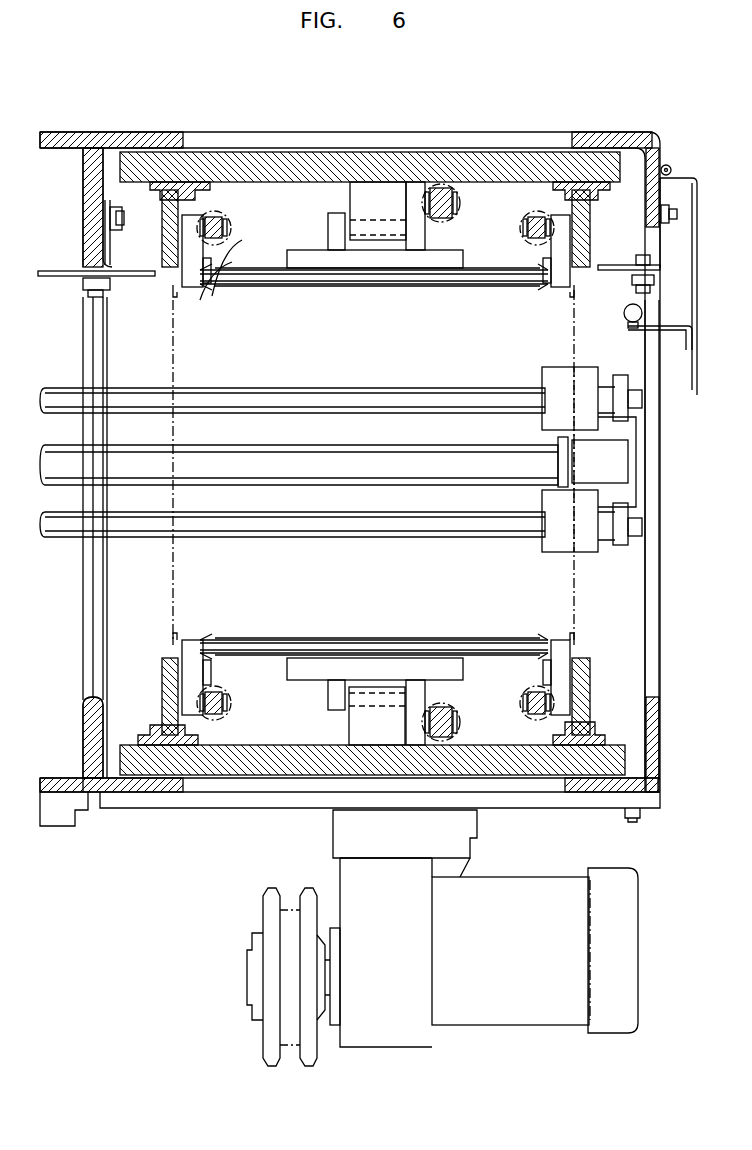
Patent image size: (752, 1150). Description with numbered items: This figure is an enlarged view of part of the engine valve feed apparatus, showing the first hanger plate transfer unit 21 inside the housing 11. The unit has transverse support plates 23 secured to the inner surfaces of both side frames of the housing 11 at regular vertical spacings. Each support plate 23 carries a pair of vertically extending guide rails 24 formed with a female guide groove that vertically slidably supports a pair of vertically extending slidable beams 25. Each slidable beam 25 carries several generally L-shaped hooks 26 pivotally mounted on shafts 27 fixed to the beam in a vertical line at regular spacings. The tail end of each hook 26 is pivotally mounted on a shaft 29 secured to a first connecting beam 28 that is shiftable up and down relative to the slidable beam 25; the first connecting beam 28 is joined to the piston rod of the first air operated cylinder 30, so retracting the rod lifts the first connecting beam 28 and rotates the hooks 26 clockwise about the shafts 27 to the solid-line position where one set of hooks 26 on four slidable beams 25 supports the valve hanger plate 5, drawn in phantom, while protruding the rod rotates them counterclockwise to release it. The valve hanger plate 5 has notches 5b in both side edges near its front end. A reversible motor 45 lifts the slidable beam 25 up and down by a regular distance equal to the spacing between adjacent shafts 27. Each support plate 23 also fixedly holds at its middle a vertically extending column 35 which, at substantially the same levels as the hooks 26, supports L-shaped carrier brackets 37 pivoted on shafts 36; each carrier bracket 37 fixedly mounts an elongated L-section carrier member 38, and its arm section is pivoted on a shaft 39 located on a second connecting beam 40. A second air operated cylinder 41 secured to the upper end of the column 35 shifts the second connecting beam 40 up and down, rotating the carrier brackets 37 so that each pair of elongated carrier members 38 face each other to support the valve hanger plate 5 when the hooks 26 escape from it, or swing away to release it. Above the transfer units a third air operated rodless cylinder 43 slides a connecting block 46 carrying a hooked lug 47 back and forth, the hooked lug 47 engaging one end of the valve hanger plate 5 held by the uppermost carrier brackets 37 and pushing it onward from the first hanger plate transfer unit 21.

The valve hanger plate 5 is at (173, 602).
The notches 5b is at (173, 320).
The housing 11 is at (620, 135).
The first hanger plate transfer unit 21 is at (660, 585).
The transverse support plate 23 is at (390, 150).
The guide rail 24 is at (208, 200).
The slidable beam 25 is at (168, 244).
The hook 26 is at (185, 272).
The shaft 27 is at (230, 275).
The first connecting beam 28 is at (220, 690).
The shaft 29 is at (228, 222).
The first air operated cylinder 30 is at (232, 236).
The column 35 is at (360, 182).
The shaft 36 is at (368, 240).
The carrier bracket 37 is at (332, 300).
The elongated carrier member 38 is at (405, 270).
The shaft 39 is at (460, 203).
The second connecting beam 40 is at (442, 218).
The second air operated cylinder 41 is at (441, 184).
The third air operated rodless cylinder 43 is at (357, 468).
The reversible motor 45 is at (437, 388).
The connecting block 46 is at (545, 542).
The hooked lug 47 is at (632, 436).